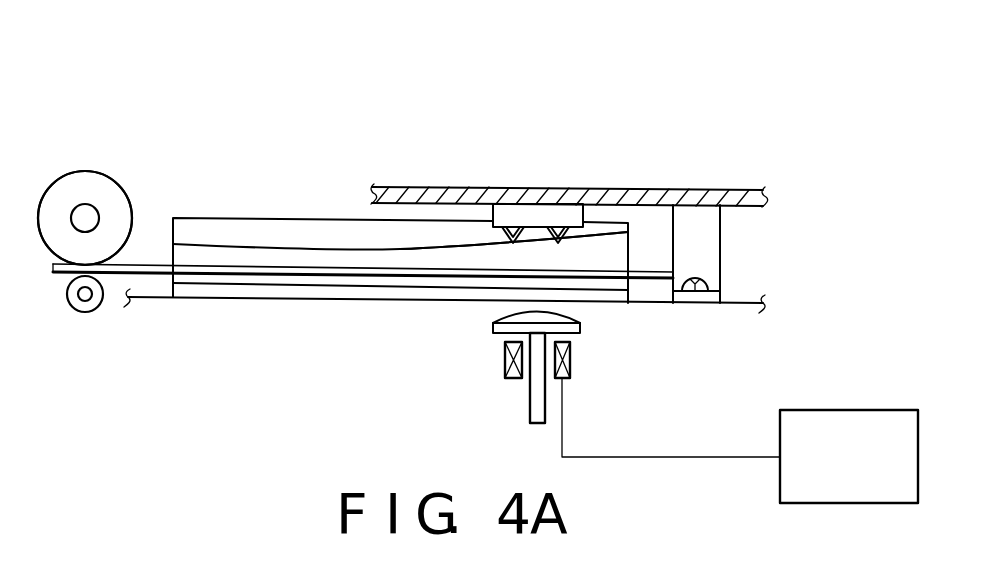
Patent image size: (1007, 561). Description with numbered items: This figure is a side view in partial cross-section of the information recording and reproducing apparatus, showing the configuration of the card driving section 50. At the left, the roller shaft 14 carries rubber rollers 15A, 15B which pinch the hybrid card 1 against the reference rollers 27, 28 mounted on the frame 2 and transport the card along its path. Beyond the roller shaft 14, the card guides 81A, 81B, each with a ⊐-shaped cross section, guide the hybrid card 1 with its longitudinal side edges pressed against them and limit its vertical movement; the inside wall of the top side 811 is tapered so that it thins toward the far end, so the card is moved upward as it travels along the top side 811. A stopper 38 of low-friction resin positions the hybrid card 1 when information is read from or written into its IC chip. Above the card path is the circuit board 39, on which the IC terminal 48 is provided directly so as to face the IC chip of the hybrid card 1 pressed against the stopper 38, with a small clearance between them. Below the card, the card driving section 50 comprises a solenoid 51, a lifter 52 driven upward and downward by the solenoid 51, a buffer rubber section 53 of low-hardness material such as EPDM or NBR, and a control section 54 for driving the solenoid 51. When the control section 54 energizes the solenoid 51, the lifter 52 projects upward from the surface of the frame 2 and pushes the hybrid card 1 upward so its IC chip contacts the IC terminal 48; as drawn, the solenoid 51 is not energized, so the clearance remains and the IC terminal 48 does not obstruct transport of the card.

The card driving section 50 is at (500, 29).
The frame 2 is at (770, 302).
The roller shaft 14 is at (52, 184).
The rubber roller 15A is at (119, 166).
The rubber roller 15B is at (84, 172).
The reference roller 27 is at (64, 335).
The reference roller 28 is at (73, 313).
The hybrid card 1 is at (156, 262).
The card guide 81A is at (292, 218).
The card guide 81B is at (400, 199).
The top side 811 is at (437, 232).
The IC terminal 48 is at (548, 220).
The circuit board 39 is at (728, 190).
The stopper 38 is at (707, 252).
The buffer rubber section 53 is at (512, 320).
The lifter 52 is at (582, 328).
The solenoid 51 is at (572, 365).
The control section 54 is at (850, 410).